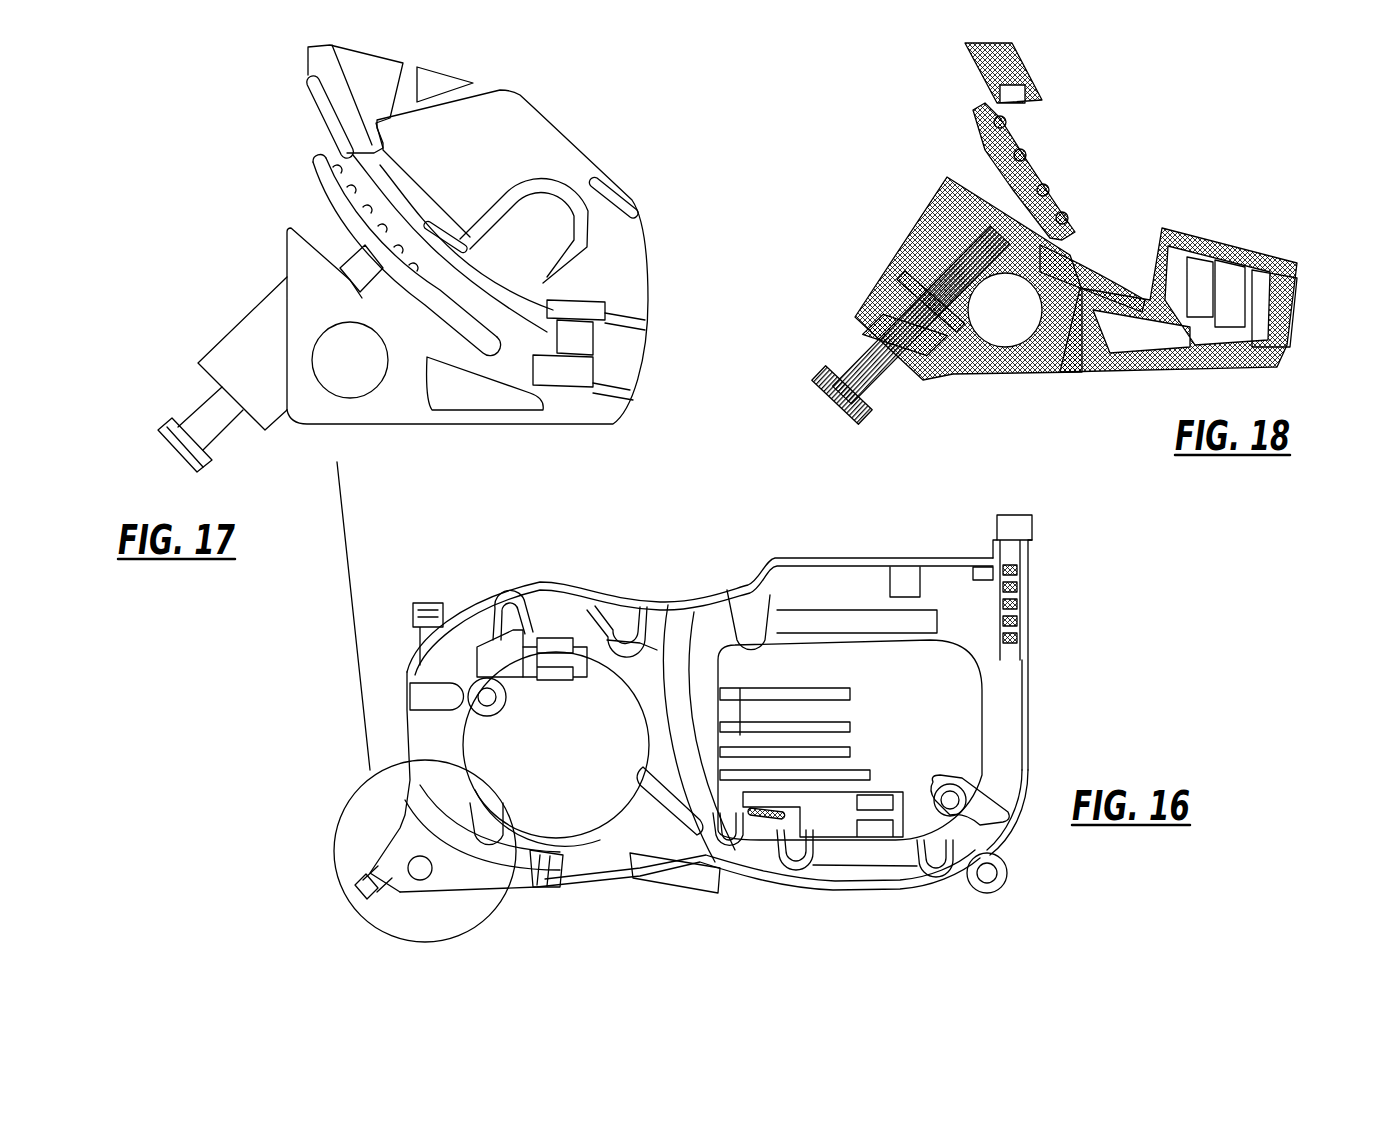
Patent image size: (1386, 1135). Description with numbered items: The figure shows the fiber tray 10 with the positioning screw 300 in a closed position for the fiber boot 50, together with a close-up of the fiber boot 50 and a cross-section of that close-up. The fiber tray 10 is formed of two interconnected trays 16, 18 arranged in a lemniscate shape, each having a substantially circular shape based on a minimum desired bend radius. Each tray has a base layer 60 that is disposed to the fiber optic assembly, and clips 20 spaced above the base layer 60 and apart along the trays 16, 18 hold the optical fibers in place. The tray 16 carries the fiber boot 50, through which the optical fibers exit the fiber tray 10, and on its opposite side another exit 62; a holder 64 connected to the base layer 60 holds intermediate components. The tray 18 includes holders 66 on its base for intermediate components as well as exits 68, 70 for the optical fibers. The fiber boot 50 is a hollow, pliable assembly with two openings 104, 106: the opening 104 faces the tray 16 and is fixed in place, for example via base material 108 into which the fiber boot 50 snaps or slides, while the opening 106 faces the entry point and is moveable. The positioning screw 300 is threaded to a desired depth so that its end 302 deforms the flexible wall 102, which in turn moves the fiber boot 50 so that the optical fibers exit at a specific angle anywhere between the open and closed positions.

In FIG. 16, the fiber tray 10 is at (912, 518).
In FIG. 17, the tray 16 is at (623, 297).
In FIG. 16, the tray 16 is at (546, 757).
In FIG. 16, the tray 18 is at (900, 717).
In FIG. 16, the clips 20 is at (610, 613).
In FIG. 17, the fiber boot 50 is at (473, 292).
In FIG. 16, the fiber boot 50 is at (473, 857).
In FIG. 16, the base layer 60 is at (550, 607).
In FIG. 16, the exit 62 is at (703, 873).
In FIG. 16, the holder 64 is at (580, 670).
In FIG. 16, the holders 66 is at (800, 700).
In FIG. 16, the exit 68 is at (737, 590).
In FIG. 16, the exit 70 is at (1013, 512).
In FIG. 17, the flexible wall 102 is at (397, 262).
In FIG. 18, the flexible wall 102 is at (1065, 213).
In FIG. 17, the opening 104 is at (587, 350).
In FIG. 17, the opening 106 is at (353, 168).
In FIG. 17, the base material 108 is at (580, 307).
In FIG. 18, the base material 108 is at (1228, 263).
In FIG. 17, the positioning screw 300 is at (222, 428).
In FIG. 18, the positioning screw 300 is at (870, 360).
In FIG. 17, the end 302 is at (343, 255).
In FIG. 18, the end 302 is at (1003, 207).